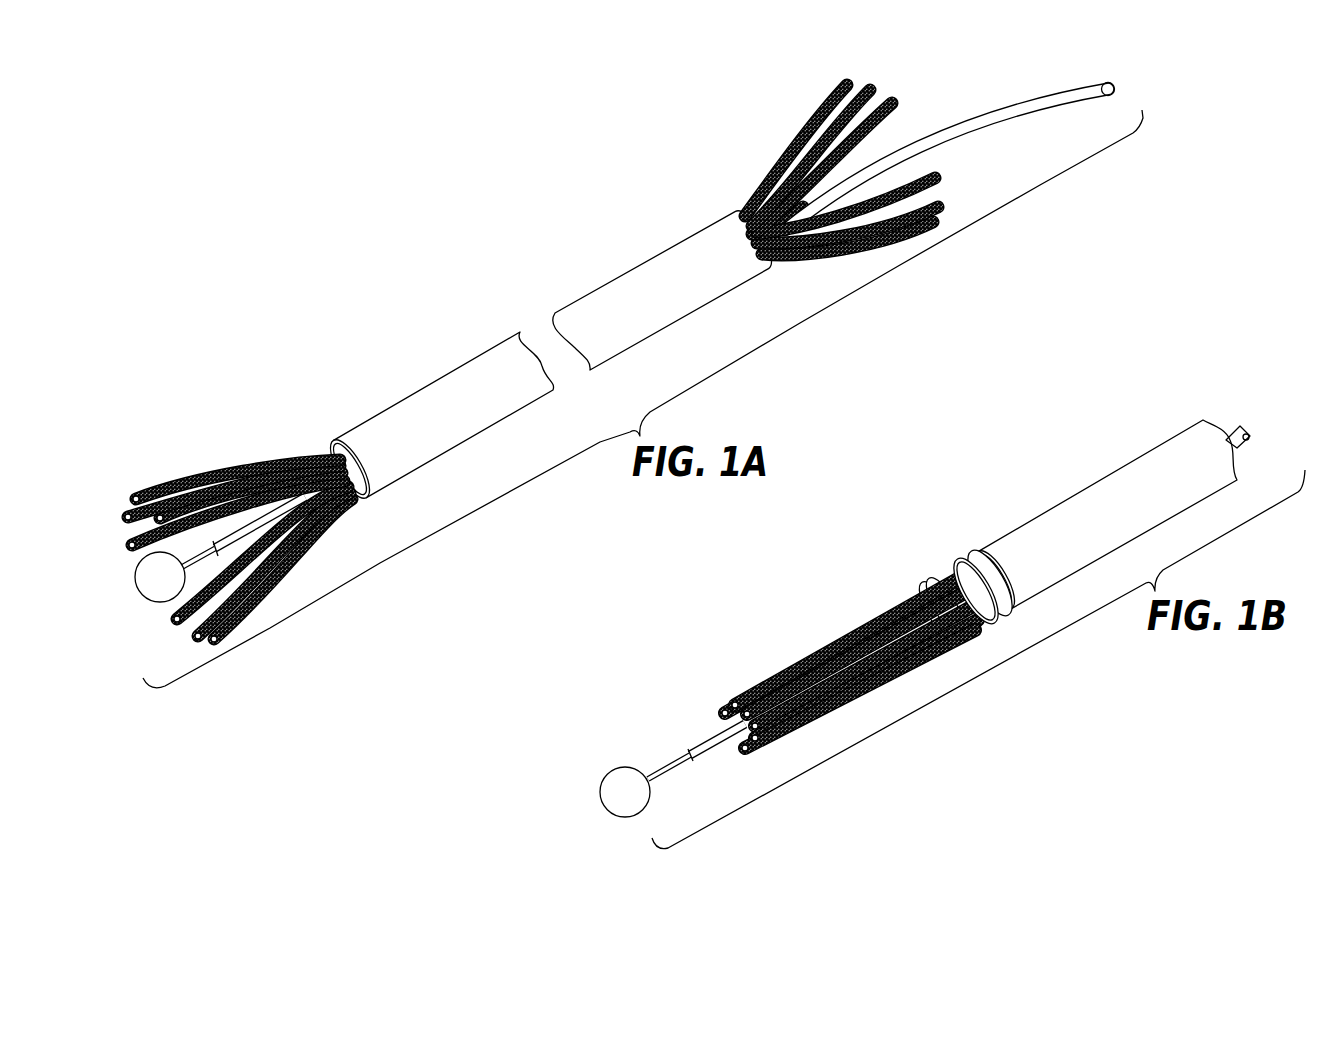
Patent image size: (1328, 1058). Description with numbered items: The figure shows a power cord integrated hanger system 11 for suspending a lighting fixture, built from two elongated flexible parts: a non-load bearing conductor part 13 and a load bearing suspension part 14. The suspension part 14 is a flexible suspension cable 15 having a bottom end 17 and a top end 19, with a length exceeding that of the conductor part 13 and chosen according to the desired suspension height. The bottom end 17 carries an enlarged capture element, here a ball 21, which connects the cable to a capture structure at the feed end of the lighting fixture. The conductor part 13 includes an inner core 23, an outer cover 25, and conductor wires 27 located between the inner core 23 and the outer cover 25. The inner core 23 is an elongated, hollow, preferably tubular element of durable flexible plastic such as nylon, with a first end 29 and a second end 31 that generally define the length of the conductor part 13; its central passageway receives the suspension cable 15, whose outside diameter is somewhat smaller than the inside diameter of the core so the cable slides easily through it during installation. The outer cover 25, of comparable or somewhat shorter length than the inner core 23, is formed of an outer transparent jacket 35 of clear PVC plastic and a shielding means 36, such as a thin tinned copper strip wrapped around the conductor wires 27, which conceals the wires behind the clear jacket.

In FIG. 1A, the power cord integrated hanger system 11 is at (550, 258).
In FIG. 1B, the power cord integrated hanger system 11 is at (876, 565).
In FIG. 1B, the conductor part 13 is at (1090, 505).
In FIG. 1B, the suspension part 14 is at (640, 730).
In FIG. 1A, the suspension cable 15 is at (957, 118).
In FIG. 1B, the suspension cable 15 is at (1245, 430).
In FIG. 1A, the bottom end 17 is at (175, 485).
In FIG. 1A, the top end 19 is at (1103, 80).
In FIG. 1A, the ball 21 is at (162, 602).
In FIG. 1B, the ball 21 is at (625, 778).
In FIG. 1A, the inner core 23 is at (277, 510).
In FIG. 1A, the outer cover 25 is at (344, 518).
In FIG. 1B, the outer cover 25 is at (984, 632).
In FIG. 1A, the conductor wires 27 is at (815, 120).
In FIG. 1B, the conductor wires 27 is at (830, 652).
In FIG. 1A, the first end 29 is at (193, 555).
In FIG. 1A, the second end 31 is at (800, 203).
In FIG. 1B, the second end 31 is at (752, 690).
In FIG. 1B, the outer transparent jacket 35 is at (993, 556).
In FIG. 1B, the shielding means 36 is at (940, 577).